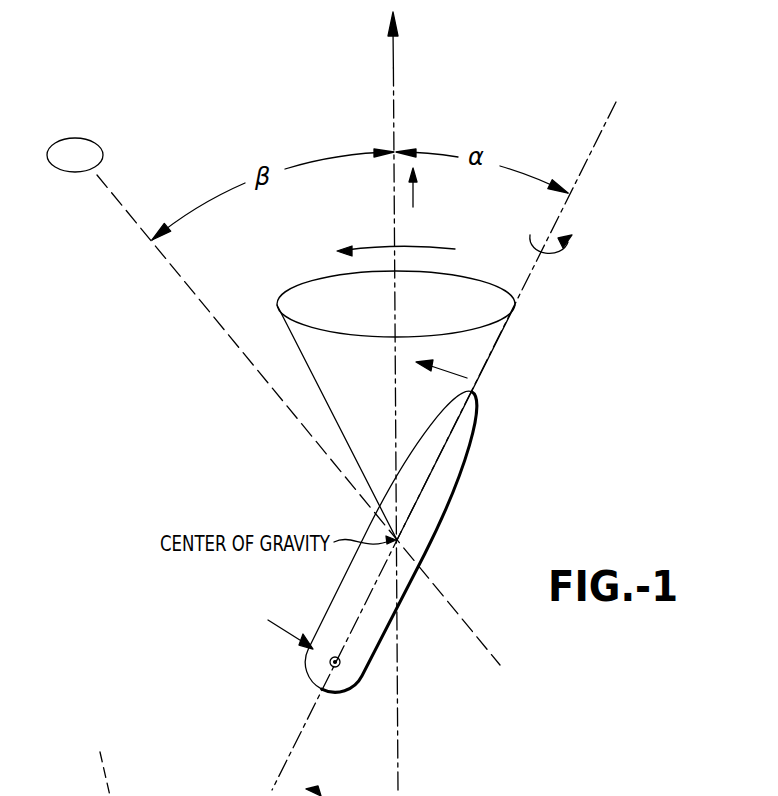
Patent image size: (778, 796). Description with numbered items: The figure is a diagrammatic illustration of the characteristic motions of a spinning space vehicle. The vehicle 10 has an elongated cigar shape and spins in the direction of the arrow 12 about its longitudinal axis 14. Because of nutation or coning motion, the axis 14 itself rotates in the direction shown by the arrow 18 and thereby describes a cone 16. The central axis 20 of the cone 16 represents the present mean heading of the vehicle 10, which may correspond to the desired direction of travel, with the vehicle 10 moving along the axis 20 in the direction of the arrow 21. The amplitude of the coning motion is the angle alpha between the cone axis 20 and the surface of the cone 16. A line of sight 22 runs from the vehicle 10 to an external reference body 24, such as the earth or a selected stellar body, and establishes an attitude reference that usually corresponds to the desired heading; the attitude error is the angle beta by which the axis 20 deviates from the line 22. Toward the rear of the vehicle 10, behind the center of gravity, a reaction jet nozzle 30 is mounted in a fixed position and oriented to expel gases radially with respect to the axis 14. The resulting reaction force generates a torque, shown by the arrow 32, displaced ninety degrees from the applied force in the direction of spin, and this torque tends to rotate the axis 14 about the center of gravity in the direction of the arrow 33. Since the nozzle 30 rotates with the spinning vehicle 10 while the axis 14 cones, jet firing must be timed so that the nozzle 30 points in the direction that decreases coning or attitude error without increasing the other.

The vehicle 10 is at (466, 470).
The arrow 12 is at (548, 251).
The longitudinal axis 14 is at (598, 130).
The cone 16 is at (326, 277).
The arrow 18 is at (413, 248).
The central axis 20 is at (394, 46).
The arrow 21 is at (413, 204).
The line of sight 22 is at (118, 201).
The external reference body 24 is at (103, 154).
The reaction jet nozzle 30 is at (341, 663).
The arrow 32 is at (268, 620).
The arrow 33 is at (443, 372).